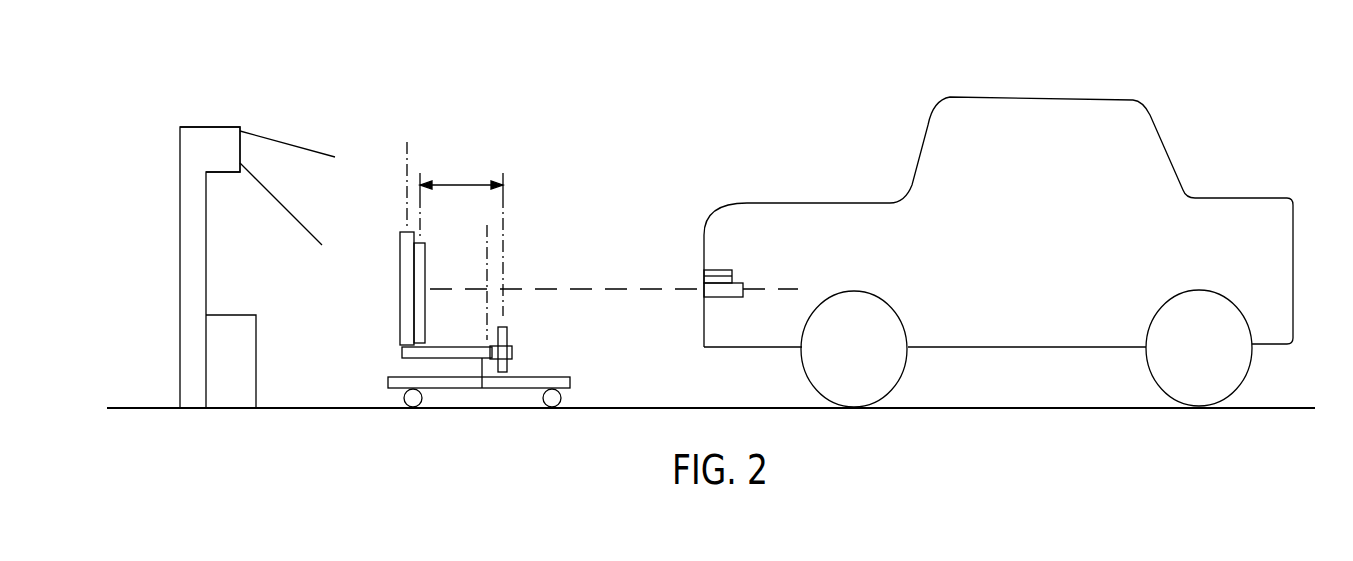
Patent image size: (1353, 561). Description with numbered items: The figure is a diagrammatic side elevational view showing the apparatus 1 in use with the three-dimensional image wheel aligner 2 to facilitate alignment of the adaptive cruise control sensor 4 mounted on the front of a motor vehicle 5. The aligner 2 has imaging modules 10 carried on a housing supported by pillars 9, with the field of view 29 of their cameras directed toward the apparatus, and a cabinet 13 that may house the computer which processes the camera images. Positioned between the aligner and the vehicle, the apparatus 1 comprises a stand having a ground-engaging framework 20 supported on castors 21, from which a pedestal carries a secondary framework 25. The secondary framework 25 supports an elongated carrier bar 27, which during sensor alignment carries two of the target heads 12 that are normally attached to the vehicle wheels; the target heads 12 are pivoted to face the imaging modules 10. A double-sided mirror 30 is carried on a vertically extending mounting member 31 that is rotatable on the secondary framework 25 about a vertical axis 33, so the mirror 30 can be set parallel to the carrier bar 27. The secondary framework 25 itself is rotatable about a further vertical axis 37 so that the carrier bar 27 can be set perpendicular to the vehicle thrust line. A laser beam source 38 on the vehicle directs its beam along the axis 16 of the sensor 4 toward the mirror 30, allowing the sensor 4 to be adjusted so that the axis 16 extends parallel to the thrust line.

The apparatus 1 is at (570, 190).
The 3D image wheel aligner 2 is at (348, 77).
The adaptive cruise control sensor 4 is at (738, 283).
The motor vehicle 5 is at (1053, 95).
The pillar 9 is at (188, 268).
The imaging module 10 is at (217, 136).
The target head 12 is at (507, 331).
The cabinet 13 is at (240, 363).
The axis of the adaptive cruise control sensor 16 is at (795, 289).
The ground-engaging framework 20 is at (450, 386).
The castor 21 is at (483, 390).
The secondary framework 25 is at (452, 348).
The carrier bar 27 is at (513, 353).
The field of view 29 is at (291, 128).
The mirror 30 is at (418, 262).
The vertically extending mounting member 31 is at (404, 298).
The vertical axis 33 is at (405, 178).
The vertical axis 37 is at (488, 242).
The laser beam source 38 is at (722, 268).